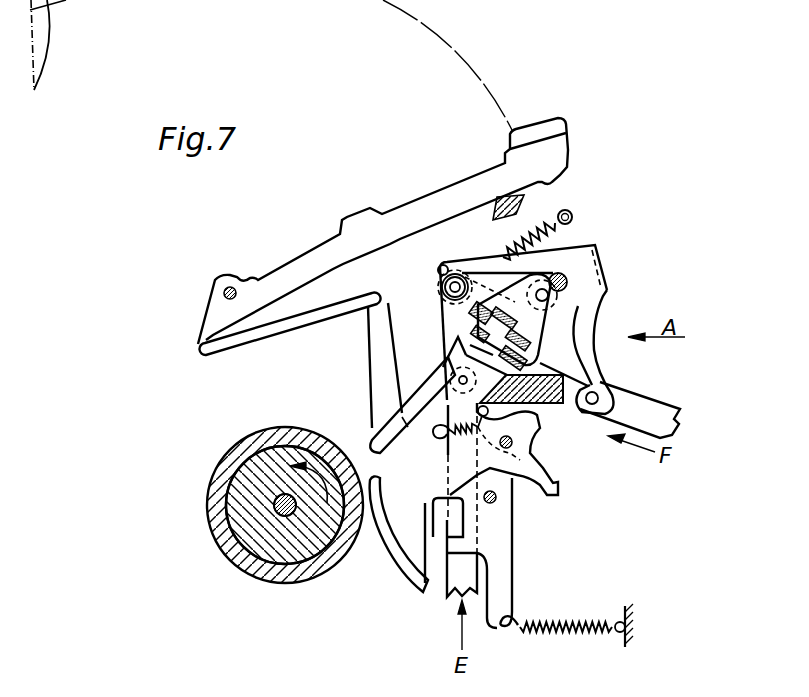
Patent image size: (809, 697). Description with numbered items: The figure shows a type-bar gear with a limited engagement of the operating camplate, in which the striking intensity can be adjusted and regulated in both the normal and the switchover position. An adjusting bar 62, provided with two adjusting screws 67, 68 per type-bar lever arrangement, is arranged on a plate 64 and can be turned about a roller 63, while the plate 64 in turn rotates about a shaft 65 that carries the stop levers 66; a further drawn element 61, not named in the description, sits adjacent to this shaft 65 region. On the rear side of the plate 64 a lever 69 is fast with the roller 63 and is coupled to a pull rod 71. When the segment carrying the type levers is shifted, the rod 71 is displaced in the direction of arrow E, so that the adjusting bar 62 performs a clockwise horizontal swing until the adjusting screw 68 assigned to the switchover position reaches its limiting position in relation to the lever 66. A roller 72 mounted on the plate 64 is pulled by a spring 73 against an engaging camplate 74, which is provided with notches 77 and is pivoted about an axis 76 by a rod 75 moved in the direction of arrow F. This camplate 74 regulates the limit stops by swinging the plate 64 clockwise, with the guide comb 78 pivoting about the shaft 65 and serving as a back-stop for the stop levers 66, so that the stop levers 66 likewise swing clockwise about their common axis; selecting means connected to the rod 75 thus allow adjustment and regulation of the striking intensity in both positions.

The pawl 61 is at (455, 352).
The adjusting bar 62 is at (540, 355).
The roller 63 is at (550, 295).
The plate 64 is at (570, 322).
The shaft 65 is at (459, 380).
The stop levers 66 is at (395, 430).
The adjusting screw 67 is at (495, 304).
The adjusting screw 68 is at (490, 350).
The lever 69 is at (513, 300).
The pull rod 71 is at (455, 580).
The roller 72 is at (438, 287).
The spring 73 is at (505, 258).
The engaging camplate 74 is at (507, 303).
The rod 75 is at (650, 412).
The axis 76 is at (567, 275).
The notches 77 is at (547, 362).
The guide comb 78 is at (548, 404).